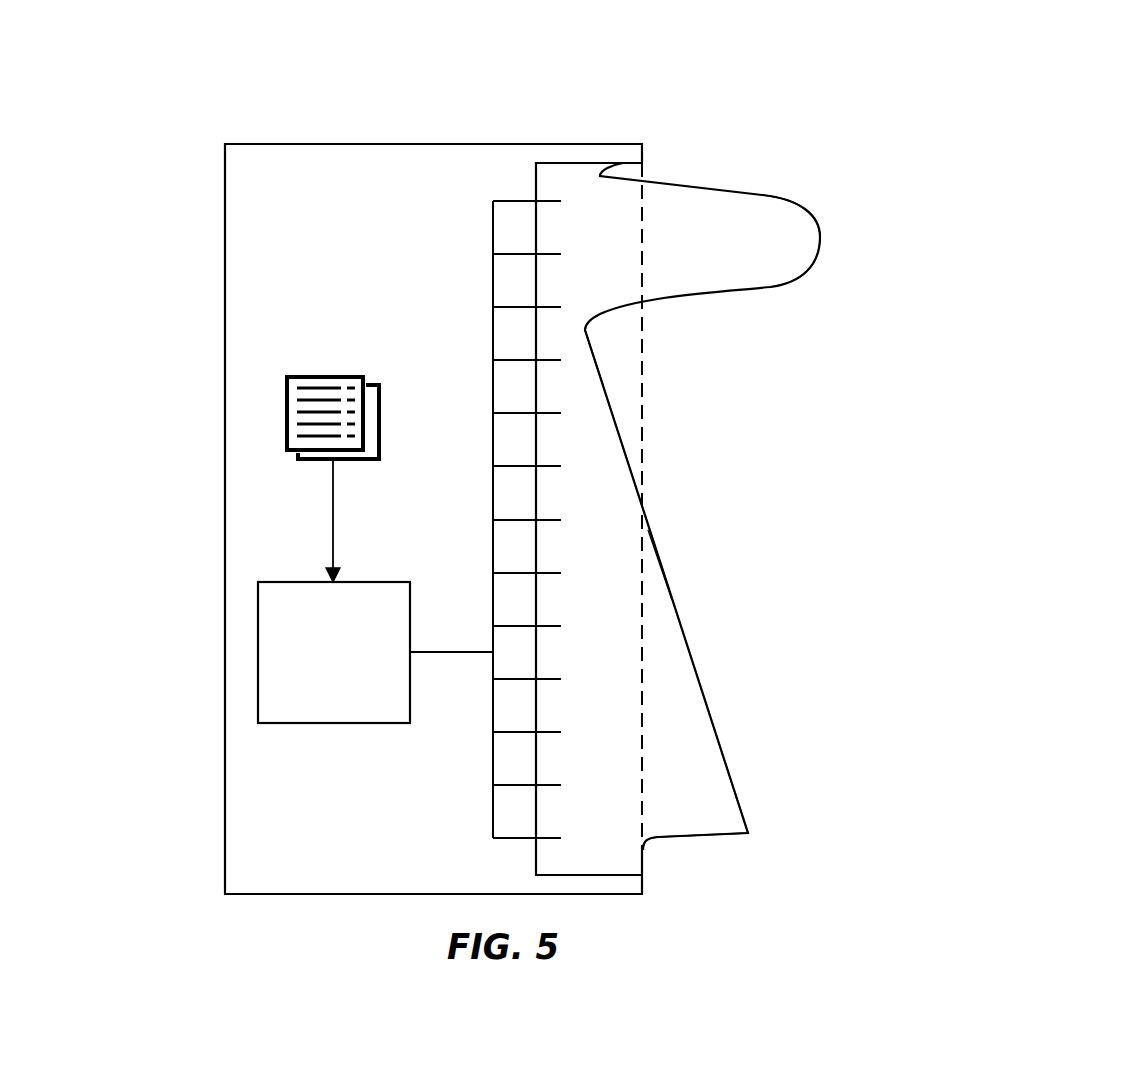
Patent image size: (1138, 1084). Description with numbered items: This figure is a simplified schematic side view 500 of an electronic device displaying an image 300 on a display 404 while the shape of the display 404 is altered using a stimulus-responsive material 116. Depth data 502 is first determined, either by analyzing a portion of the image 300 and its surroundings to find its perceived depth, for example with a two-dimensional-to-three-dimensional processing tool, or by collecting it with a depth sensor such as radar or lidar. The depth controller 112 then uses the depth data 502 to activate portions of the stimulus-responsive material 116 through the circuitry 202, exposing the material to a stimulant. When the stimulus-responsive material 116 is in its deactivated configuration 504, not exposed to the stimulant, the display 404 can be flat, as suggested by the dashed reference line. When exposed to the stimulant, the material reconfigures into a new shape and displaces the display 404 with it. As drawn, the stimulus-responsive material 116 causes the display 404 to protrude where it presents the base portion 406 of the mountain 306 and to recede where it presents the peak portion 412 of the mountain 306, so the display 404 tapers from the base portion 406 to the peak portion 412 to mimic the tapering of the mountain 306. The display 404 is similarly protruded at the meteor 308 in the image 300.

The simplified schematic side view 500 is at (1056, 102).
The stimulus-responsive material 116 is at (597, 160).
The circuitry 202 is at (493, 491).
The image 300 is at (808, 718).
The meteor 308 is at (820, 237).
The peak portion 412 is at (602, 376).
The deactivated configuration 504 is at (641, 418).
The display 404 is at (665, 573).
The mountain 306 is at (686, 641).
The base portion 406 is at (748, 826).
The depth data 502 is at (337, 377).
The depth controller 112 is at (375, 652).